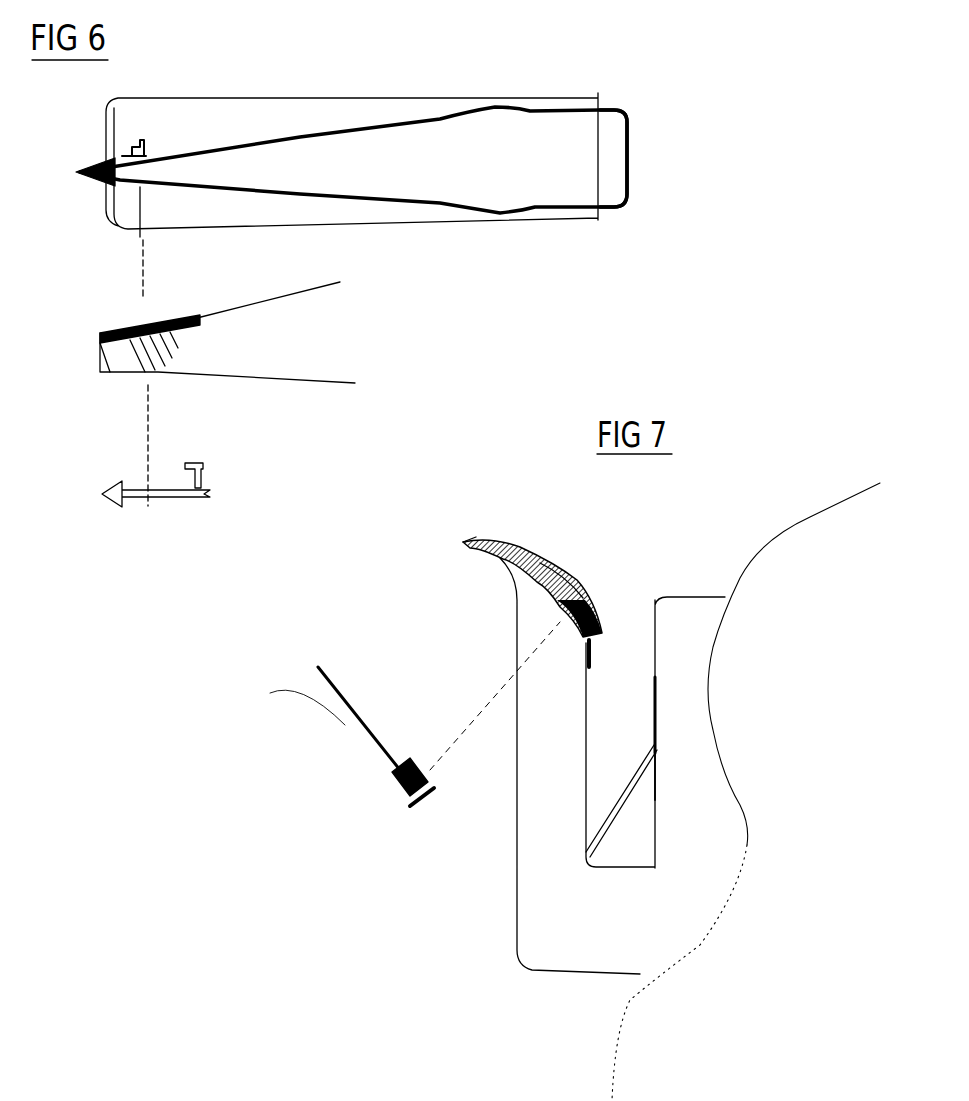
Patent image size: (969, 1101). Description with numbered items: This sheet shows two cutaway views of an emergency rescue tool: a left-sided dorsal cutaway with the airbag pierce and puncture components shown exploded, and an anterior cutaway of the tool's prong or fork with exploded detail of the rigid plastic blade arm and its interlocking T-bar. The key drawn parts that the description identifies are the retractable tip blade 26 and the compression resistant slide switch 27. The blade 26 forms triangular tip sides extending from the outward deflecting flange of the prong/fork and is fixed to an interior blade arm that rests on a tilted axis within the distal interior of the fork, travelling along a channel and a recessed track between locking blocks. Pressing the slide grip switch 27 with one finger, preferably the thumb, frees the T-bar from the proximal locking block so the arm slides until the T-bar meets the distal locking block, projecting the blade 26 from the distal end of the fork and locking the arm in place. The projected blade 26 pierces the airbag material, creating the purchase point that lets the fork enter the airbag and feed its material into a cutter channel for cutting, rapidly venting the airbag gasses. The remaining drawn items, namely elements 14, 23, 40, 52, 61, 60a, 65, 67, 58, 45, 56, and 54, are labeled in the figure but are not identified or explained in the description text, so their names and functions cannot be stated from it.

In FIG. 6, the blade 14 is at (340, 146).
In FIG. 6, the housing 23 is at (142, 154).
In FIG. 6, the clip 40 is at (108, 106).
In FIG. 6, the end cap 52 is at (613, 128).
In FIG. 6, the mounting plate 61 is at (187, 313).
In FIG. 6, the mount body 60a is at (112, 354).
In FIG. 6, the hatched portion 65 is at (176, 336).
In FIG. 6, the stud 67 is at (208, 463).
In FIG. 6, the direction arrow 58 is at (150, 508).
In FIG. 7, the slide switch 27 is at (569, 594).
In FIG. 7, the bracket 45 is at (565, 567).
In FIG. 7, the housing body 56 is at (604, 635).
In FIG. 7, the blade edge 54 is at (464, 543).
In FIG. 7, the retractable tip blade 26 is at (536, 570).